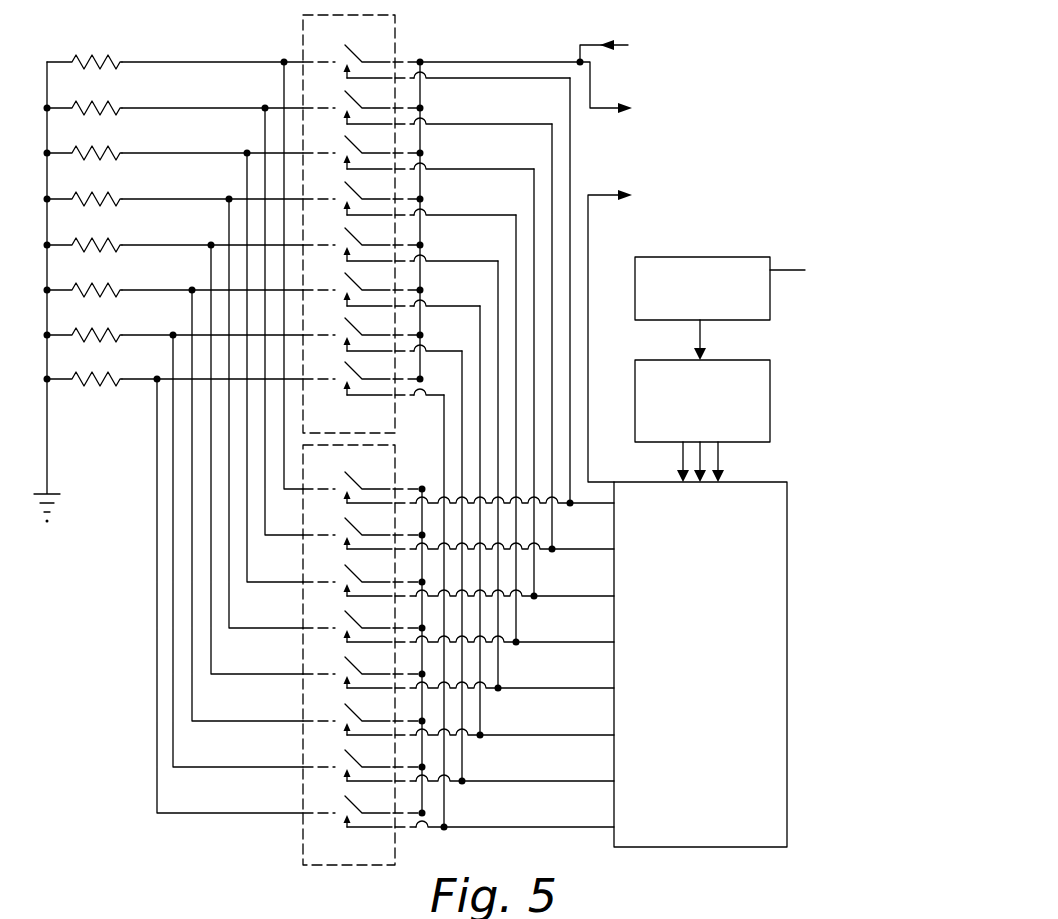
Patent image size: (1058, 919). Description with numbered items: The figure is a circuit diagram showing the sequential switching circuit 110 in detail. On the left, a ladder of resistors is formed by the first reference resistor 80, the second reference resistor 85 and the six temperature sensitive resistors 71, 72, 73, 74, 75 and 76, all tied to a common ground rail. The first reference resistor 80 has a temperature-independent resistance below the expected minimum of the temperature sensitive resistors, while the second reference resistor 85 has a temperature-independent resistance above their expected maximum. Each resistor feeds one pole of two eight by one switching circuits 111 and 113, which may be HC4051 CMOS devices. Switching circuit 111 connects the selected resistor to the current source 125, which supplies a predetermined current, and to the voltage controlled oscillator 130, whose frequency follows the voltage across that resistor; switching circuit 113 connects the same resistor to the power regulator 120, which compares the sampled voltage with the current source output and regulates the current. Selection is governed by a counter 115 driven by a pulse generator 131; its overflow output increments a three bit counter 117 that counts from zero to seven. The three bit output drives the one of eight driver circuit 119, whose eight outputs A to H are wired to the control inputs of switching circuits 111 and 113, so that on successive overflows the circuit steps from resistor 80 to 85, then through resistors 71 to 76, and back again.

The first reference resistor 80 is at (109, 55).
The second reference resistor 85 is at (109, 101).
The temperature sensitive resistor 71 is at (109, 146).
The temperature sensitive resistor 72 is at (109, 192).
The temperature sensitive resistor 73 is at (109, 238).
The temperature sensitive resistor 74 is at (109, 283).
The temperature sensitive resistor 75 is at (109, 328).
The temperature sensitive resistor 76 is at (109, 372).
The sequential switching circuit 110 is at (537, 50).
The switching circuit 111 is at (436, 224).
The switching circuit 113 is at (436, 655).
The counter 115 is at (636, 257).
The three bit counter 117 is at (638, 357).
The one of eight driver circuit 119 is at (638, 473).
The current source 125 is at (724, 59).
The voltage controlled oscillator 130 is at (730, 135).
The power regulator 120 is at (728, 209).
The pulse generator 131 is at (858, 282).